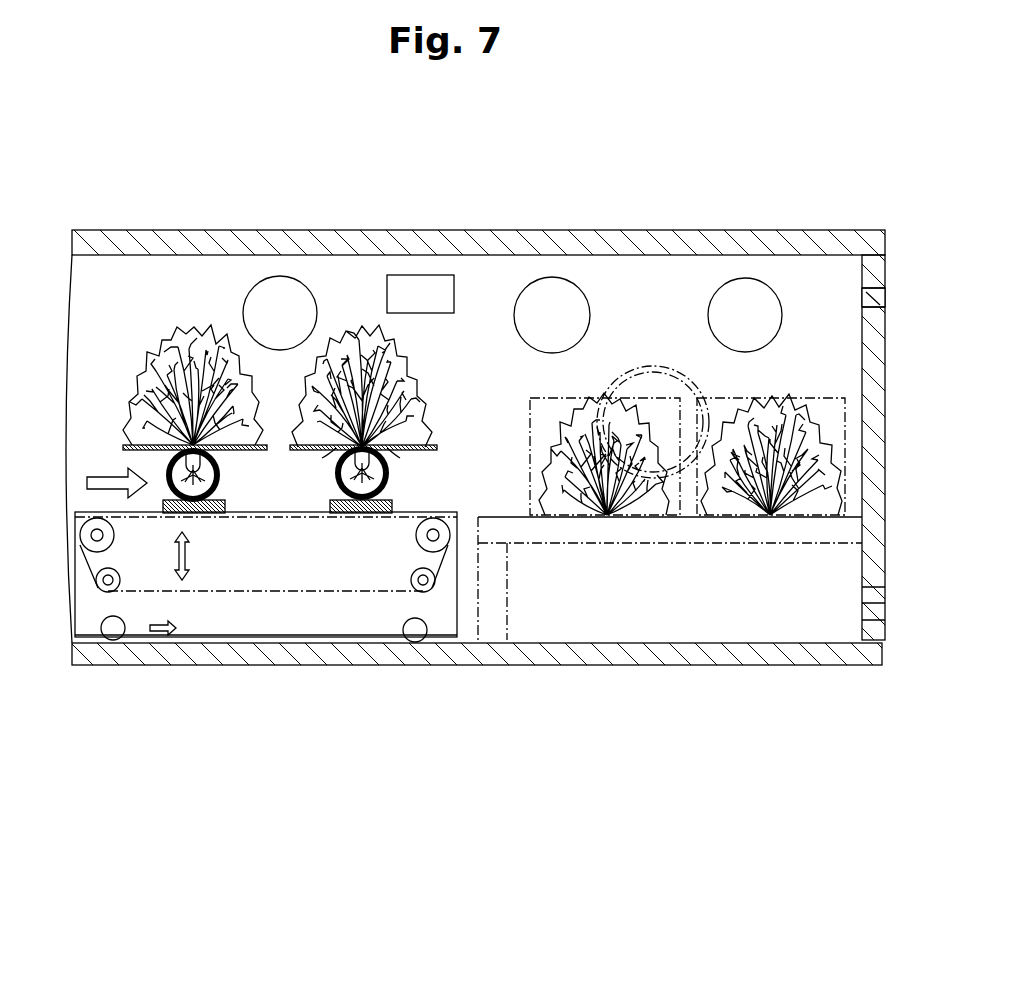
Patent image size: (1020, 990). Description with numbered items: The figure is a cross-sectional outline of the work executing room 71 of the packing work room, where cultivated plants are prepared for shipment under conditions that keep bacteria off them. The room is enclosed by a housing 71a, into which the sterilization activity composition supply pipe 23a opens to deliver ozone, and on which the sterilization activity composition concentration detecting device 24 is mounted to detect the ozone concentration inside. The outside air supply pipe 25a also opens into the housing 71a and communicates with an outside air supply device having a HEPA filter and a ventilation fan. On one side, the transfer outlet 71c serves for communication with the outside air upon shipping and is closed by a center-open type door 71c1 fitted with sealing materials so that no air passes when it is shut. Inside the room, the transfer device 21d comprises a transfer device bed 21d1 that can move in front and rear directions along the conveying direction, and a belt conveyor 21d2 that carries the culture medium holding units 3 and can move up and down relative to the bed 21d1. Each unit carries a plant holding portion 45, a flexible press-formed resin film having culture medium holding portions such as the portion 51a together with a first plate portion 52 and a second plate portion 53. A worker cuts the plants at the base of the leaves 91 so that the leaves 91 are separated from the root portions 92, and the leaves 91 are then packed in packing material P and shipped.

The work executing room 71 is at (475, 418).
The housing 71a is at (242, 230).
The transfer outlet 71c is at (858, 556).
The center-open type door 71c1 is at (860, 353).
The sterilization activity composition supply pipe 23a is at (298, 277).
The sterilization activity composition concentration detecting device 24 is at (417, 285).
The outside air supply pipe 25a is at (558, 285).
The leaves 91 is at (410, 347).
The plant holding portion 45 is at (403, 445).
The first plate portion 52 is at (400, 452).
The second plate portion 53 is at (313, 458).
The culture medium holding portion 51a is at (393, 468).
The root portions 92 is at (393, 480).
The culture medium holding unit 3 is at (365, 513).
The packing material P is at (530, 492).
The transfer device 21d is at (266, 681).
The transfer device bed 21d1 is at (213, 610).
The belt conveyor 21d2 is at (300, 515).